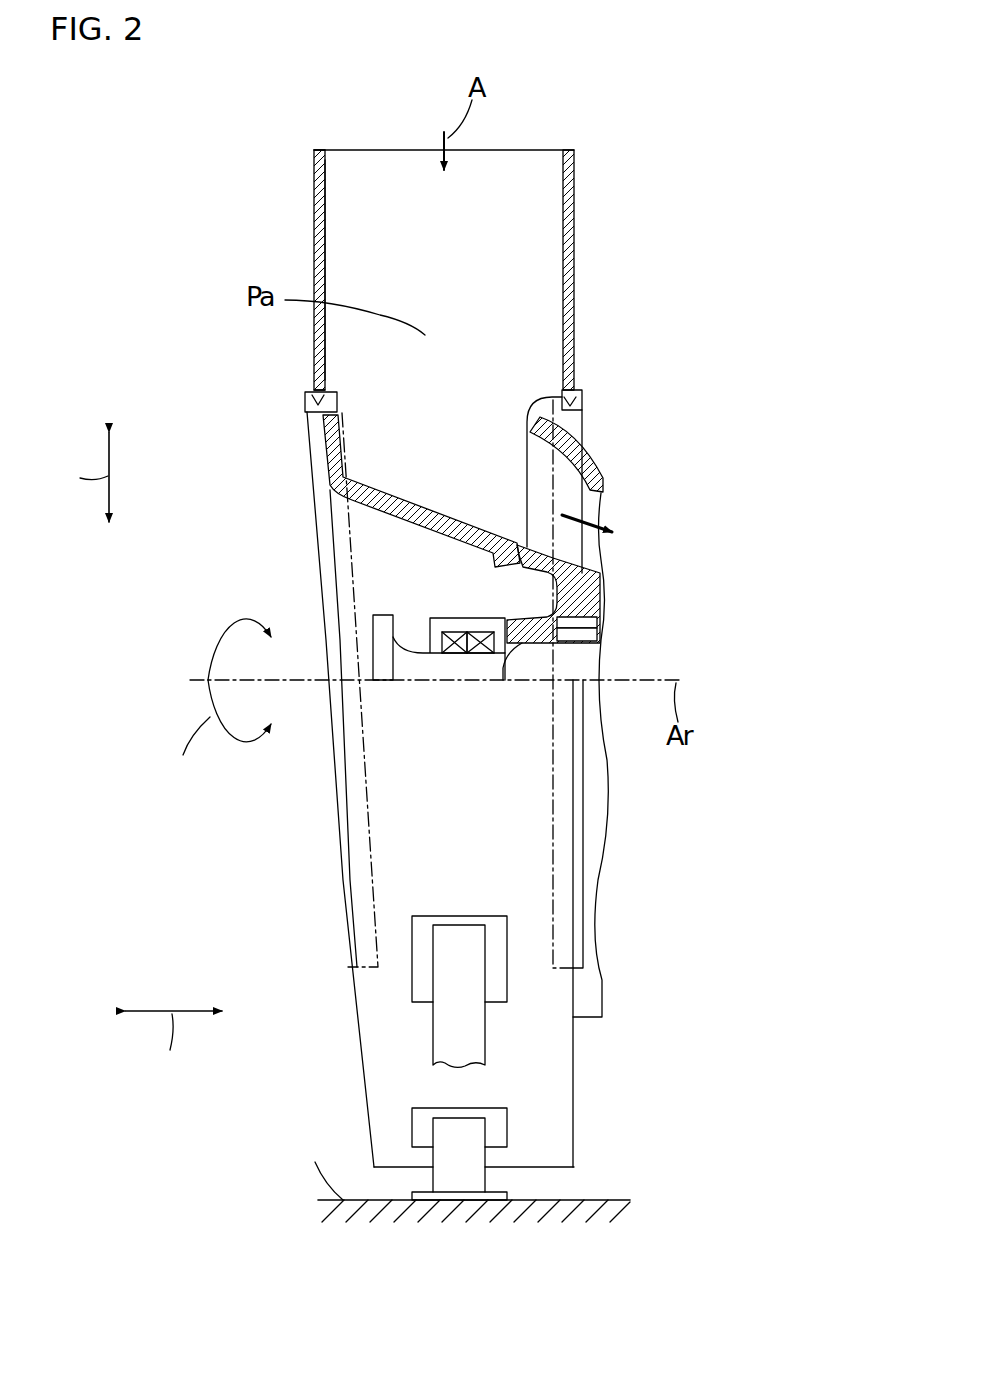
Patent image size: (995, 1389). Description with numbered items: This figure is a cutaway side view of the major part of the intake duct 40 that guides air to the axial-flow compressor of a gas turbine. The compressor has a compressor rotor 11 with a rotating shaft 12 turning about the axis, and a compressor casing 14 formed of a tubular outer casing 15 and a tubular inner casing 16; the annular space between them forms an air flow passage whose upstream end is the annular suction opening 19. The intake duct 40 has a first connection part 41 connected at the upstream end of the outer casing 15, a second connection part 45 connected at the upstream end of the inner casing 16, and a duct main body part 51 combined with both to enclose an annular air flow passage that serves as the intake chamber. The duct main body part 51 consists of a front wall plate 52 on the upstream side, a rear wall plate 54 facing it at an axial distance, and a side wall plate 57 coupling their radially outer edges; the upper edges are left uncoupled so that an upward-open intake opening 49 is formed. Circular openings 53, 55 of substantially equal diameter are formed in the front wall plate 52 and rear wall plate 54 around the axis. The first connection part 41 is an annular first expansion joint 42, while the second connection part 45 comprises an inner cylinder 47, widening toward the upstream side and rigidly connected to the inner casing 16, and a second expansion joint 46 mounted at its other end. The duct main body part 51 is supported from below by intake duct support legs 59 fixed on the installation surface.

The intake duct 40 is at (602, 147).
The first connection part 41 is at (582, 397).
The first expansion joint 42 is at (650, 352).
The second connection part 45 is at (228, 405).
The second expansion joint 46 is at (305, 412).
The inner cylinder 47 is at (352, 500).
The intake opening 49 is at (532, 150).
The duct main body part 51 is at (228, 150).
The front wall plate 52 is at (314, 218).
The opening 53 is at (325, 390).
The rear wall plate 54 is at (563, 258).
The opening 55 is at (563, 388).
The side wall plate 57 is at (352, 180).
The compressor casing 14 is at (790, 438).
The outer casing 15 is at (601, 482).
The inner casing 16 is at (600, 593).
The suction opening 19 is at (527, 483).
The compressor rotor 11 is at (430, 668).
The rotating shaft 12 is at (300, 825).
The intake duct support leg 59 is at (480, 1032).